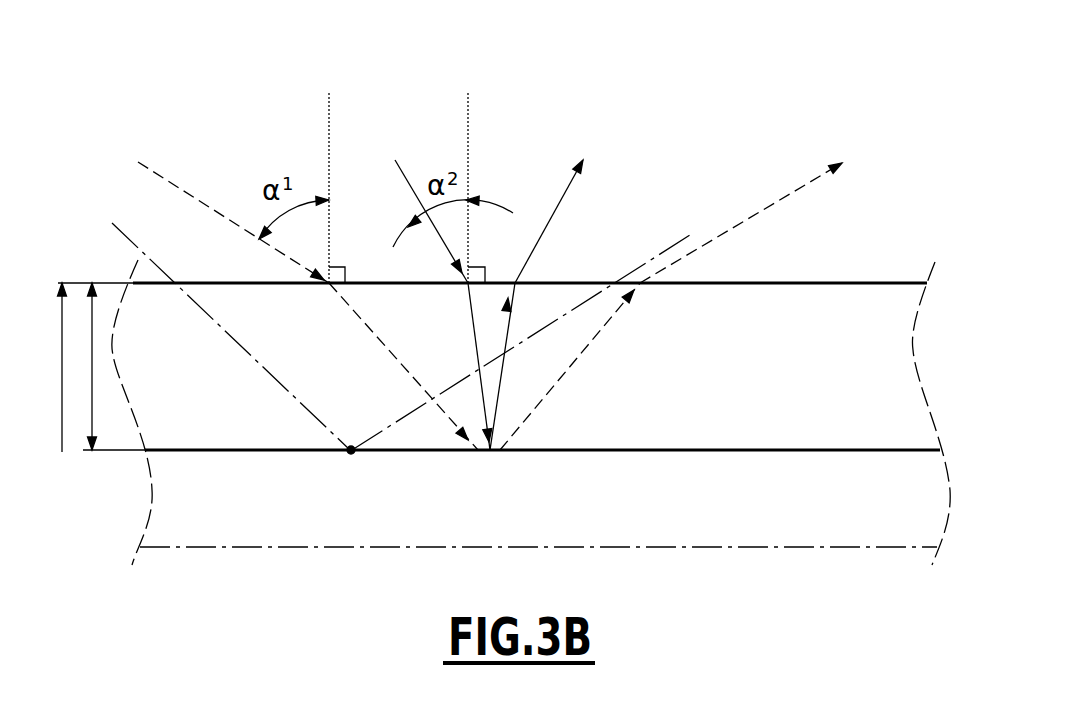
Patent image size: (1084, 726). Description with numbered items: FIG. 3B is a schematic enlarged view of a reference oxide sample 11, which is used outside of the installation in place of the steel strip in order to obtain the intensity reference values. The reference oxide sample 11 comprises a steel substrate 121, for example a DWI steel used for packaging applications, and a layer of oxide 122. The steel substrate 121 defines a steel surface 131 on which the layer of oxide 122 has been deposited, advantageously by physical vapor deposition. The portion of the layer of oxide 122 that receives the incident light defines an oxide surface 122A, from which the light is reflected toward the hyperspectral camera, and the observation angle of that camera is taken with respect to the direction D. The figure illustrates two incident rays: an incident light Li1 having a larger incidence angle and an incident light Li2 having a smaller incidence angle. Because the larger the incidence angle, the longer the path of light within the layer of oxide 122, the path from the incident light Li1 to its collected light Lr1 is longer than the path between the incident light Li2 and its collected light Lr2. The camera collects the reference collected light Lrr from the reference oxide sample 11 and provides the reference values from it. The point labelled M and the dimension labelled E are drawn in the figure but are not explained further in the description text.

The reference oxide sample 11 is at (215, 102).
The oxide surface 122A is at (878, 280).
The layer of oxide 122 is at (552, 366).
The steel substrate 121 is at (538, 515).
The steel surface 131 is at (802, 447).
The incident light Li1 is at (162, 178).
The incident light Li2 is at (404, 170).
The collected light Lr1 is at (545, 233).
The collected light Lr2 is at (760, 210).
The reference collected light Lrr is at (643, 263).
The reflection point M is at (350, 453).
The direction D is at (94, 367).
The thickness E is at (85, 366).